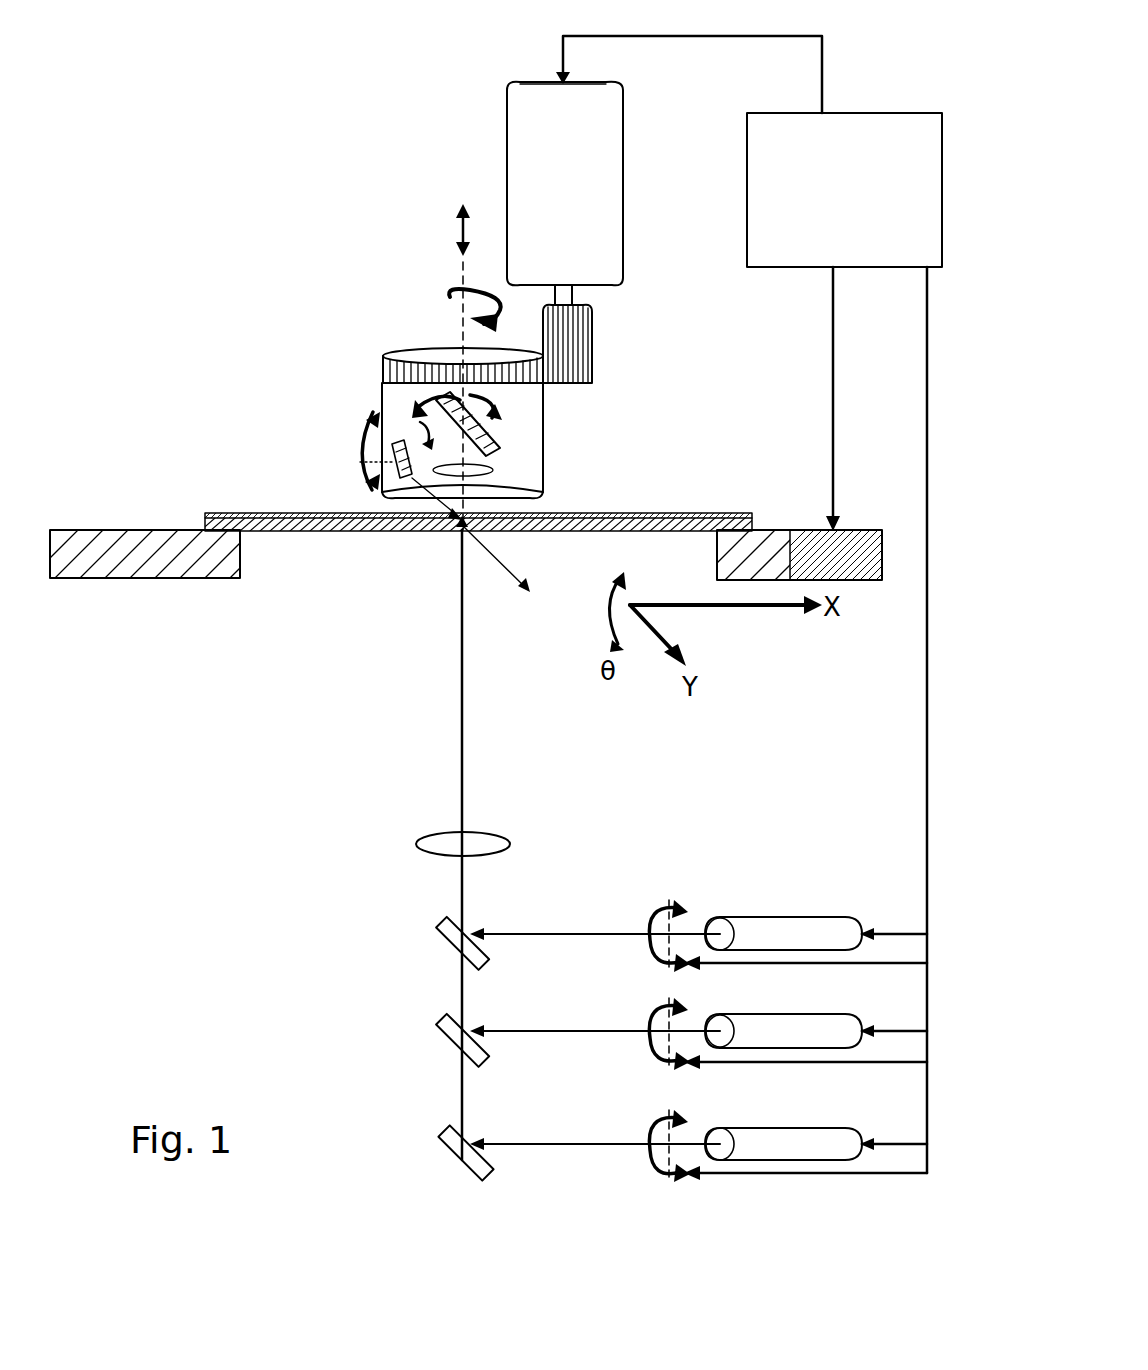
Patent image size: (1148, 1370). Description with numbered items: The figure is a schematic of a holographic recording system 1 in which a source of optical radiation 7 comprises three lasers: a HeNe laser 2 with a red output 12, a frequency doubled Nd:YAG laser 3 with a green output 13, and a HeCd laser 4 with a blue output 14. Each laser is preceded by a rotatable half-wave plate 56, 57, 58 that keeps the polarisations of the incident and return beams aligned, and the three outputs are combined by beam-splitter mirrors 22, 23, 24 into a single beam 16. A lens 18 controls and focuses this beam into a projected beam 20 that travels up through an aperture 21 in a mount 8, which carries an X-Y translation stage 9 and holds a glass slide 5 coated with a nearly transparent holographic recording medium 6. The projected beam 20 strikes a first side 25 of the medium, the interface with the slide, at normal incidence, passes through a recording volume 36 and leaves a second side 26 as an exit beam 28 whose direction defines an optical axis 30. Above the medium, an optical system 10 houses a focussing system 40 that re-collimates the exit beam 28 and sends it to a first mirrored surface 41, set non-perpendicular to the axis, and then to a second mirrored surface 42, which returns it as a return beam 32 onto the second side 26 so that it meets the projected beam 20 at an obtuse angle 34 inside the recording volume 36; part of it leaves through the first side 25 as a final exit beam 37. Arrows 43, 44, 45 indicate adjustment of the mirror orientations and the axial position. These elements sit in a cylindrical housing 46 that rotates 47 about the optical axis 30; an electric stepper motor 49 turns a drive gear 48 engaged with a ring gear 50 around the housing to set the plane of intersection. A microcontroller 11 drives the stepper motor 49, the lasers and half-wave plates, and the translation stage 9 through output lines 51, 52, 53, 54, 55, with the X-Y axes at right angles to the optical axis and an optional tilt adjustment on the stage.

The holographic recording system 1 is at (212, 352).
The HeNe laser 2 is at (740, 916).
The frequency doubled Nd:YAG laser 3 is at (745, 1013).
The HeCd laser 4 is at (755, 1127).
The glass slide 5 is at (370, 532).
The holographic recording medium 6 is at (238, 512).
The source of optical radiation 7 is at (770, 860).
The mount 8 is at (192, 578).
The X-Y translation stage 9 is at (876, 530).
The optical system 10 is at (501, 416).
The microcontroller 11 is at (777, 268).
The red output 12 is at (628, 930).
The green output 13 is at (628, 1028).
The blue output 14 is at (628, 1142).
The single beam 16 is at (464, 886).
The lens 18 is at (424, 838).
The projected beam 20 is at (460, 698).
The aperture 21 is at (242, 566).
The beam-splitter mirror 22 is at (446, 928).
The beam-splitter mirror 23 is at (446, 1030).
The beam-splitter mirror 24 is at (446, 1144).
The first side 25 is at (345, 532).
The second side 26 is at (650, 512).
The exit beam 28 is at (476, 470).
The optical axis 30 is at (462, 279).
The return beam 32 is at (390, 504).
The obtuse angle 34 is at (455, 545).
The recording volume 36 is at (520, 500).
The final exit beam 37 is at (500, 580).
The focussing system 40 is at (543, 460).
The first mirrored surface 41 is at (548, 418).
The second mirrored surface 42 is at (409, 443).
The orientation adjustment arrow 43 is at (465, 424).
The orientation adjustment arrow 44 is at (362, 468).
The axial position adjustment arrow 45 is at (460, 230).
The housing 46 is at (555, 398).
The rotation 47 is at (440, 308).
The drive gear 48 is at (592, 340).
The electric stepper motor 49 is at (520, 166).
The ring gear 50 is at (395, 360).
The output line 51 is at (700, 36).
The output line 52 is at (906, 932).
The output line 53 is at (906, 1030).
The output line 54 is at (906, 1143).
The output line 55 is at (832, 384).
The rotatable half-wave plate 56 is at (655, 956).
The rotatable half-wave plate 57 is at (655, 1058).
The rotatable half-wave plate 58 is at (655, 1170).